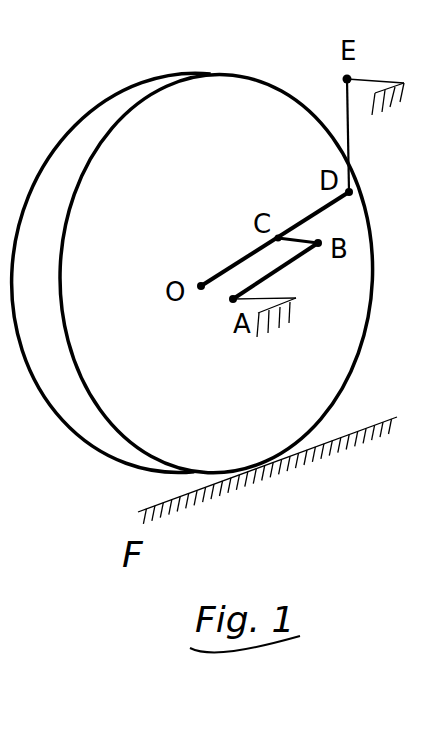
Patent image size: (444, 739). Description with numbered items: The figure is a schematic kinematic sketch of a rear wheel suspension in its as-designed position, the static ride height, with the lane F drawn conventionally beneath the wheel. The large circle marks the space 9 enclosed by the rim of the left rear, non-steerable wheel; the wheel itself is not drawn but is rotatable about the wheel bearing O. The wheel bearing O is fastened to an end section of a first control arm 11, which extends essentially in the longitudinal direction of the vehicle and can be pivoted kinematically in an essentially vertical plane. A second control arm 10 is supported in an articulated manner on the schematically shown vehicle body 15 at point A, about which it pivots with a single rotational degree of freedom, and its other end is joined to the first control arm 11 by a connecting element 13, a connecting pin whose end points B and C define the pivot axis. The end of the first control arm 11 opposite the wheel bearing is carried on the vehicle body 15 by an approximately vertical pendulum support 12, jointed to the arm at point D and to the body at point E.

The space enclosed by the rim of the wheel 9 is at (95, 424).
The second control arm 10 is at (279, 270).
The first control arm 11 is at (230, 270).
The pendulum support 12 is at (350, 120).
The connecting element 13 is at (298, 240).
The vehicle body 15 is at (332, 204).